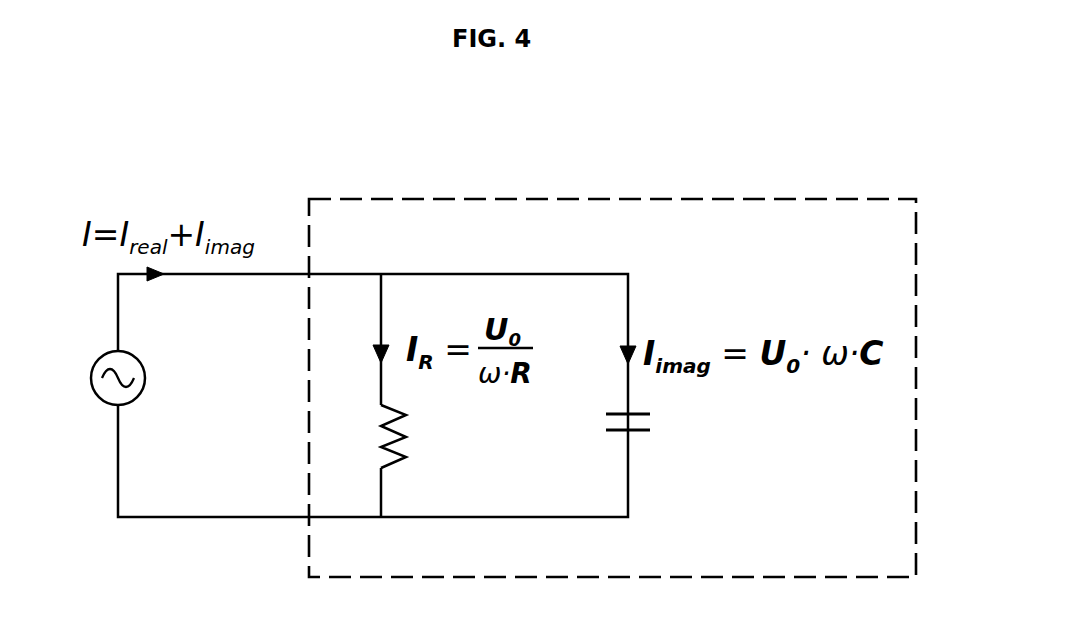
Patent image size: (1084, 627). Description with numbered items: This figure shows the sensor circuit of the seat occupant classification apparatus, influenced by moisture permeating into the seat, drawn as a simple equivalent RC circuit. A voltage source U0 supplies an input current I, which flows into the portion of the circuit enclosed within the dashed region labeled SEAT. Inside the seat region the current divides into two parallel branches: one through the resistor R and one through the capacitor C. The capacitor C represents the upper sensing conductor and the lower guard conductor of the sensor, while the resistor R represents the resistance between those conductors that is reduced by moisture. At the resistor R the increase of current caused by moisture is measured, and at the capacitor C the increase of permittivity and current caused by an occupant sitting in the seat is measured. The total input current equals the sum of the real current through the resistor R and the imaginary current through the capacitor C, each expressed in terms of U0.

The seat SEAT is at (612, 362).
The voltage source U0 is at (96, 378).
The resistor R is at (371, 436).
The capacitor C is at (638, 447).